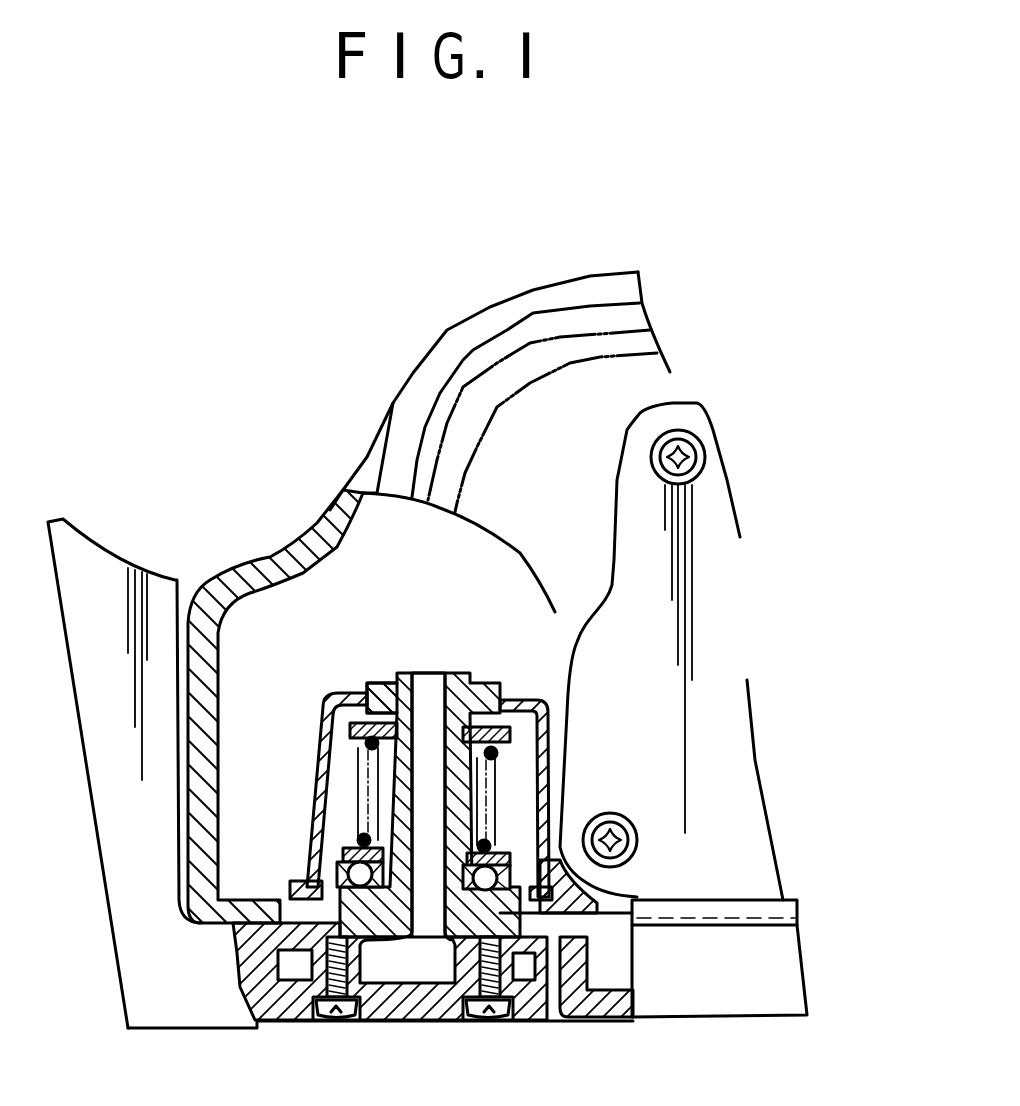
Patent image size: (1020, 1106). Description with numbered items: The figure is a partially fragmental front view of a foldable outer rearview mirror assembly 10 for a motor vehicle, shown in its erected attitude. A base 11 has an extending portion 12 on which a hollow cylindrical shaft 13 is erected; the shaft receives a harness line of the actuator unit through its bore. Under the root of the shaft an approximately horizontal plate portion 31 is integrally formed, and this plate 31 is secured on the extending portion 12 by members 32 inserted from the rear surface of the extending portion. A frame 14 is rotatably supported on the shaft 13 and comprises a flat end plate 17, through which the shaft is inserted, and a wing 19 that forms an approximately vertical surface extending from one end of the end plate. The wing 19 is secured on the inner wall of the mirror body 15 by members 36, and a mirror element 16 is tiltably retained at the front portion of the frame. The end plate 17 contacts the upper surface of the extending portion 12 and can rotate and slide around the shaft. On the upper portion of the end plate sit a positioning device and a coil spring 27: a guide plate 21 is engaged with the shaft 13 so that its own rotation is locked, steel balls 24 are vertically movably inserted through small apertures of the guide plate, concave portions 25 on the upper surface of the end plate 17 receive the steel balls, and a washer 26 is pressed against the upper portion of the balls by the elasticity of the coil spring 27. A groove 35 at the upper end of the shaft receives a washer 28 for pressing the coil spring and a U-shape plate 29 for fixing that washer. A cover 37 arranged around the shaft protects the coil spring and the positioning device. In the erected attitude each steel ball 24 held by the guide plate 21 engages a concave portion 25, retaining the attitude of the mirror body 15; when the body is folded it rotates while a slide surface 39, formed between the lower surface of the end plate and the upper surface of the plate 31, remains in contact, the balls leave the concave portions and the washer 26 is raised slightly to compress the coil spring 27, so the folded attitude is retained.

The outer rearview mirror assembly 10 is at (645, 265).
The base 11 is at (103, 572).
The extending portion 12 is at (540, 1010).
The shaft 13 is at (440, 677).
The frame 14 is at (764, 788).
The mirror body 15 is at (503, 313).
The mirror element 16 is at (655, 335).
The end plate 17 is at (303, 893).
The wing 19 is at (710, 500).
The guide plate 21 is at (337, 876).
The steel balls 24 is at (345, 868).
The concave portions 25 is at (365, 942).
The washer 26 is at (352, 840).
The coil spring 27 is at (366, 754).
The washer 28 is at (350, 725).
The U-shape plate 29 is at (360, 683).
The plate portion 31 is at (305, 958).
The members 32 is at (339, 1022).
The groove 35 is at (470, 745).
The members 36 is at (665, 450).
The cover 37 is at (524, 700).
The slide surface 39 is at (460, 965).